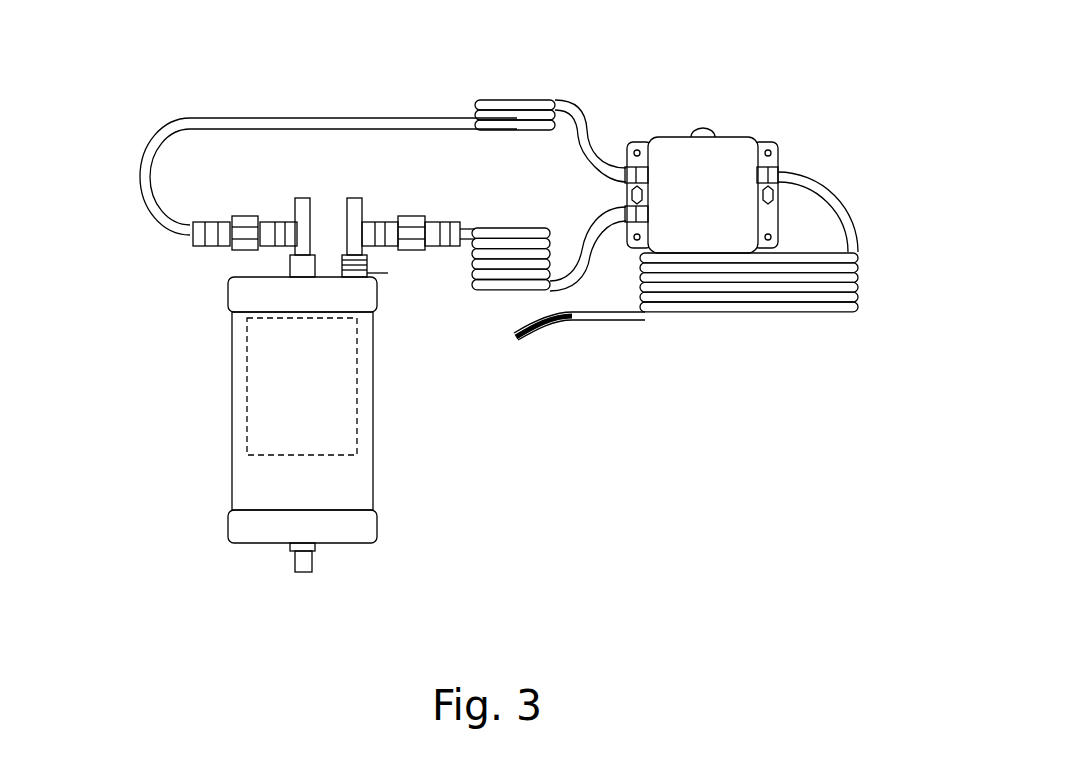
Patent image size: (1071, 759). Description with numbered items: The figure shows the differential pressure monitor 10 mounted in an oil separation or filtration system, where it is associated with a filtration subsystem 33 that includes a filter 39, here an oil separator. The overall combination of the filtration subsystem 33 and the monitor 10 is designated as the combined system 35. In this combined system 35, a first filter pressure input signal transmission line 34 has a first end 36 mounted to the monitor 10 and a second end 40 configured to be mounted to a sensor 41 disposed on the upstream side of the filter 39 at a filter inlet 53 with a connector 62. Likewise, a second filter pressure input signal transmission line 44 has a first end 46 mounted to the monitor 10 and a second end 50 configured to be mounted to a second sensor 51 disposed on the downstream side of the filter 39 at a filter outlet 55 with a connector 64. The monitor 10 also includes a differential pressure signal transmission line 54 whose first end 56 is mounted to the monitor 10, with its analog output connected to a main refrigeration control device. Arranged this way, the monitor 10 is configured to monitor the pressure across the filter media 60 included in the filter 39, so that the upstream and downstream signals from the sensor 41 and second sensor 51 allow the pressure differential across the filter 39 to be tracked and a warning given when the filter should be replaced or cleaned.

The differential pressure monitor 10 is at (674, 147).
The filtration subsystem 33 is at (219, 387).
The first filter pressure input signal transmission line 34 is at (330, 118).
The combined system 35 is at (356, 138).
The first end 36 is at (625, 170).
The filter 39 is at (232, 353).
The second end 40 is at (170, 197).
The sensor 41 is at (247, 216).
The second filter pressure input signal transmission line 44 is at (572, 240).
The first end 46 is at (626, 213).
The second end 50 is at (462, 240).
The second sensor 51 is at (403, 216).
The filter inlet 53 is at (290, 273).
The differential pressure signal transmission line 54 is at (820, 182).
The filter outlet 55 is at (398, 283).
The first end 56 is at (778, 172).
The filter media 60 is at (247, 428).
The connector 62 is at (300, 200).
The connector 64 is at (353, 205).